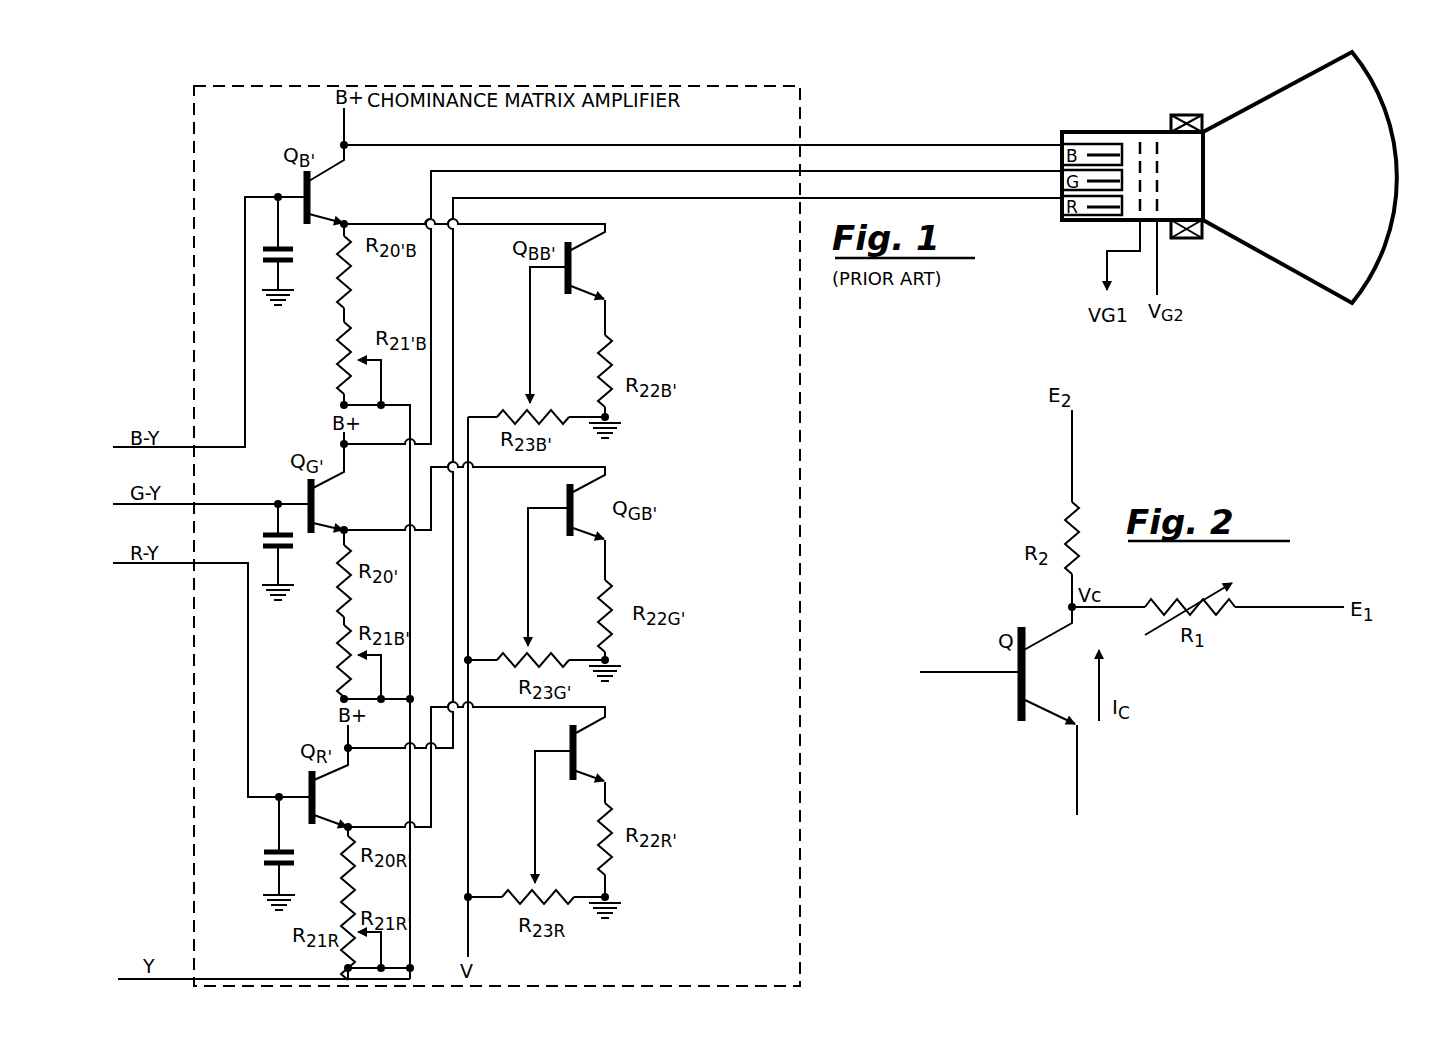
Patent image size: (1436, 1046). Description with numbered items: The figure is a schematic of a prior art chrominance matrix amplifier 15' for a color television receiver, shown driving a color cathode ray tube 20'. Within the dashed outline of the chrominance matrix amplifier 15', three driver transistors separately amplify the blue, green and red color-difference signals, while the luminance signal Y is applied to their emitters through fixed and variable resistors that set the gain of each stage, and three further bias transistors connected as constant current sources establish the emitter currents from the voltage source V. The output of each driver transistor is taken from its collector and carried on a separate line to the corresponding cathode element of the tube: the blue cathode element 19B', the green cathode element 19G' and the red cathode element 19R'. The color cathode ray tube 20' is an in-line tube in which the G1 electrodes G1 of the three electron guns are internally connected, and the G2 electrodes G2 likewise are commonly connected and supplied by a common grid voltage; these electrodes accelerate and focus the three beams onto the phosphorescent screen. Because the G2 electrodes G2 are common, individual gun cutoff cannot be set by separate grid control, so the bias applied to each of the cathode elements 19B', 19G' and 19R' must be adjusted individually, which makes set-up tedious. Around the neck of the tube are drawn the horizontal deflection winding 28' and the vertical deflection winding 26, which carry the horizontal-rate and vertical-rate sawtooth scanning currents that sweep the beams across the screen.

The chrominance matrix amplifier 15' is at (465, 536).
The cathode element of the blue electron gun 19B' is at (708, 119).
The cathode element of the green electron gun 19G' is at (746, 141).
The cathode element of the red electron gun 19R' is at (757, 221).
The color cathode ray tube 20' is at (1229, 177).
The horizontal deflection winding 28' is at (1187, 101).
The vertical deflection winding 26 is at (1205, 240).
The G1 electrode G1 is at (1141, 190).
The G2 electrode G2 is at (1158, 167).